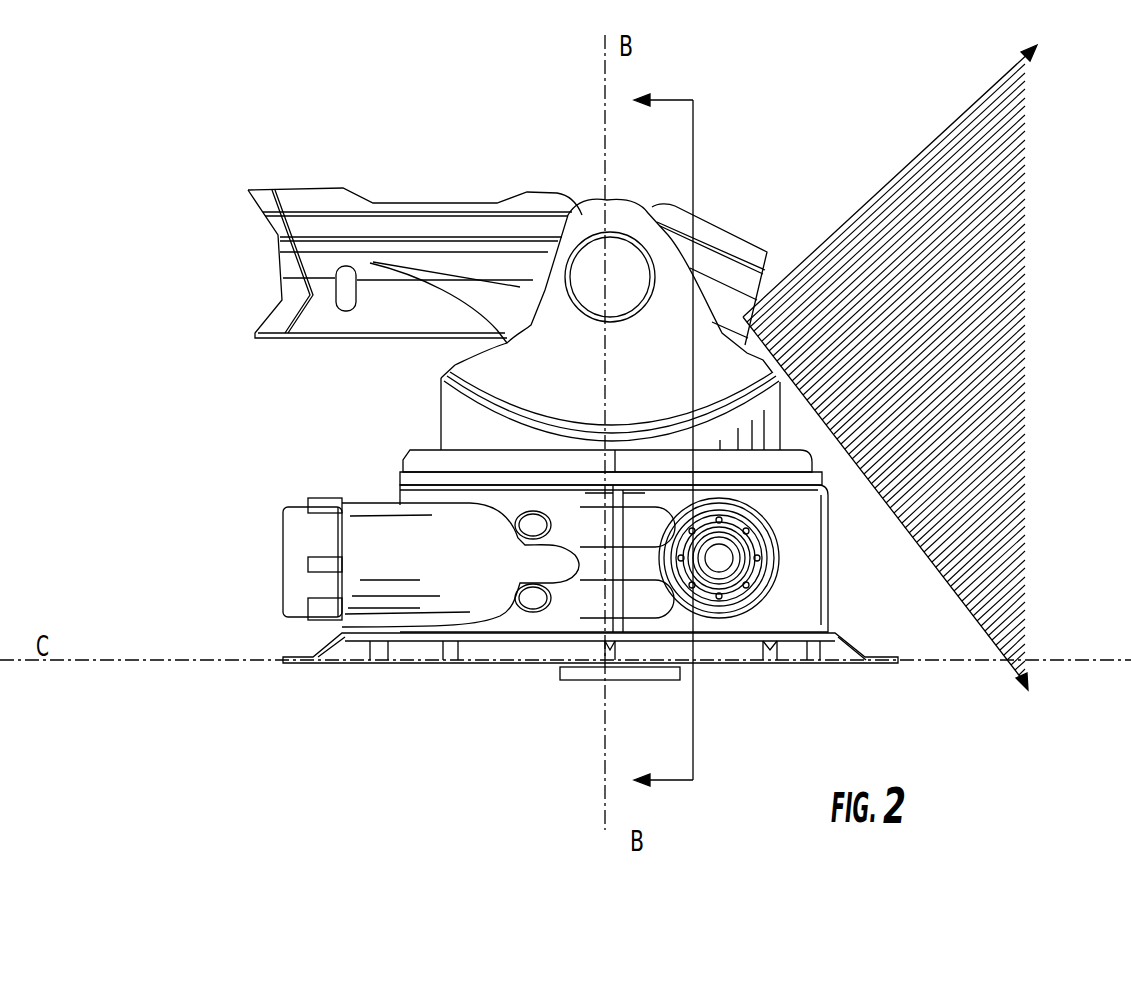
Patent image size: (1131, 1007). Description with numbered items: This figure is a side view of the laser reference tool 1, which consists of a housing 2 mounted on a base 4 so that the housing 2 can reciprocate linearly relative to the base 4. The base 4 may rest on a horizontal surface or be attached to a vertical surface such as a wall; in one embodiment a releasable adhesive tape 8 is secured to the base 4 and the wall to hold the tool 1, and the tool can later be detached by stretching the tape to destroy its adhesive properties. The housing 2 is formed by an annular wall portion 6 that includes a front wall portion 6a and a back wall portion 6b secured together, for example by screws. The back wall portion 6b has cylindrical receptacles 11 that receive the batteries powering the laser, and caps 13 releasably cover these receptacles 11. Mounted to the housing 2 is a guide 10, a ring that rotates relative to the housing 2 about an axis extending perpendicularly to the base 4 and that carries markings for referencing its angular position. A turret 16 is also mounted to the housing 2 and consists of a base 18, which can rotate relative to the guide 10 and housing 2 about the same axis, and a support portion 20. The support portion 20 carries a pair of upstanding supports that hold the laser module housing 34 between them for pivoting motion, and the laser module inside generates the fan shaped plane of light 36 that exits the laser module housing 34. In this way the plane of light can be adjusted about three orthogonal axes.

The laser reference tool 1 is at (201, 574).
The housing 2 is at (860, 586).
The base 4 is at (845, 665).
The annular wall portion 6 is at (674, 441).
The front wall portion 6a is at (787, 605).
The back wall portion 6b is at (537, 612).
The releasable adhesive tape 8 is at (637, 681).
The guide 10 is at (412, 457).
The cylindrical receptacles 11 is at (366, 601).
The caps 13 is at (292, 598).
The turret 16 is at (380, 376).
The base (of turret) 18 is at (445, 414).
The support portion 20 is at (478, 365).
The laser module housing 34 is at (316, 186).
The fan shaped plane of light 36 is at (912, 197).